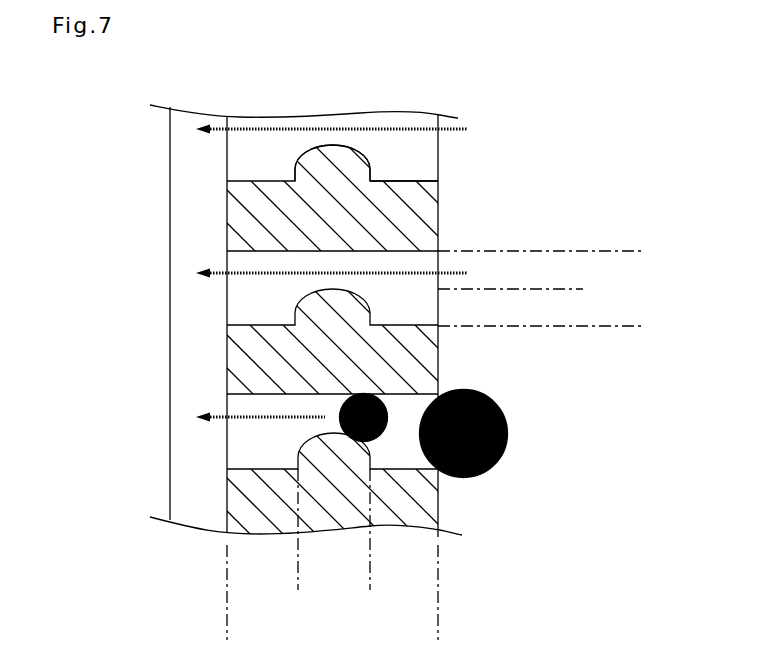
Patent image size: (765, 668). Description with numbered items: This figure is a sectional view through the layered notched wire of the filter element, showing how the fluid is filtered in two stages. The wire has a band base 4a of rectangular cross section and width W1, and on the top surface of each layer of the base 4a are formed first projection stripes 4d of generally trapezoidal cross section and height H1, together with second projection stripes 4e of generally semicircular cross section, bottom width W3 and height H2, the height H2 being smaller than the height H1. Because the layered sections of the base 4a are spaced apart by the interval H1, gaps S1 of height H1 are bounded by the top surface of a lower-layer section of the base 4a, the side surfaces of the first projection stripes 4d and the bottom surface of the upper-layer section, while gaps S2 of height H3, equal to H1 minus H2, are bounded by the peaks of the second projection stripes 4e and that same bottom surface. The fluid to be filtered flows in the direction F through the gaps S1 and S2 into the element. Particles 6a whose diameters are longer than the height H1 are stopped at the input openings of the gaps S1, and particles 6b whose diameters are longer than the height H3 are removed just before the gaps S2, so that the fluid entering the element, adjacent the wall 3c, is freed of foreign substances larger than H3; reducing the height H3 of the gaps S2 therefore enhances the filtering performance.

The inner wall surface of housing 3c is at (185, 195).
The band base 4a is at (425, 494).
The first projection stripe 4d is at (227, 302).
The second projection stripe 4e is at (357, 157).
The particle 6a is at (498, 400).
The particle 6b is at (382, 393).
The gap S1 is at (425, 168).
The gap S2 is at (335, 122).
The fluid flow F is at (330, 273).
The height of the first projection stripes H1 is at (642, 251).
The height of the second projection stripes H2 is at (583, 270).
The height of the gaps S2 H3 is at (523, 232).
The width of the base W1 is at (438, 625).
The bottom width of the second projection stripes W3 is at (370, 578).